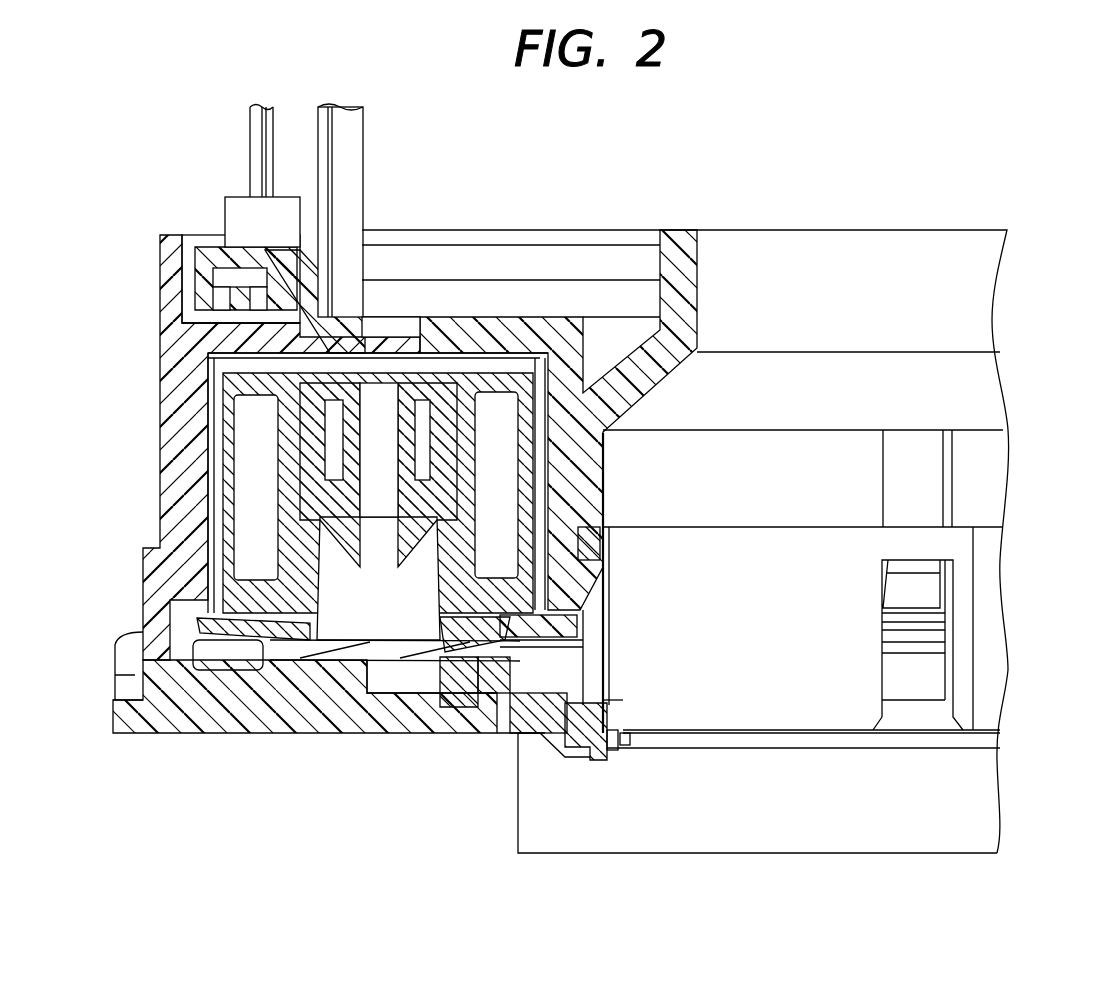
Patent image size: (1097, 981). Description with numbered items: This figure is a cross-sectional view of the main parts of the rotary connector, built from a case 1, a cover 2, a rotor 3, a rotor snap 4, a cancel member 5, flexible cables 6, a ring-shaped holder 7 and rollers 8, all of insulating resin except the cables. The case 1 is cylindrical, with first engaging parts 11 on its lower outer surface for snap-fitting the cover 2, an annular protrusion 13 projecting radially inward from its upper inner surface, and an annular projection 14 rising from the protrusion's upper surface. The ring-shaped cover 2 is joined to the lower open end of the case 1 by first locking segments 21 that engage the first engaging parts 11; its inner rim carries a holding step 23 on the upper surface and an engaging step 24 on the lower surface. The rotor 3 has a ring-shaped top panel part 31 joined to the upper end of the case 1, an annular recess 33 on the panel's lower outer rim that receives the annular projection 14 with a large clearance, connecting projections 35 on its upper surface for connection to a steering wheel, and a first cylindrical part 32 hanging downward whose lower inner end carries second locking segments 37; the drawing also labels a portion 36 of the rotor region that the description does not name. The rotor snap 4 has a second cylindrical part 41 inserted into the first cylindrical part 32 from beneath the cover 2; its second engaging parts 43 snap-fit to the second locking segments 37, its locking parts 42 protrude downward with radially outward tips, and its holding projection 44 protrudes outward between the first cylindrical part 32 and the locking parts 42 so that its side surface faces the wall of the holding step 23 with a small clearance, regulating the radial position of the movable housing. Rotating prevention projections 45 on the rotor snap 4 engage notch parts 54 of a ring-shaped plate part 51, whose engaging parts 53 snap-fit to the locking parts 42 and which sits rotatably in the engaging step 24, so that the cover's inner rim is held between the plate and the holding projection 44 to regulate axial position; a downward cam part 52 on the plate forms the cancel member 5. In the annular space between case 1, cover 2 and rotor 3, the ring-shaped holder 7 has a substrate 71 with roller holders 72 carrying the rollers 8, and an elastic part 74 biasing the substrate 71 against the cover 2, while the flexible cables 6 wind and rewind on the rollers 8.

The case 1 is at (180, 436).
The cover 2 is at (254, 700).
The rotor 3 is at (548, 323).
The rotor snap 4 is at (787, 715).
The cancel member 5 is at (678, 820).
The flexible cables 6 is at (206, 486).
The ring-shaped holder 7 is at (258, 640).
The rollers 8 is at (228, 392).
The first engaging parts 11 is at (128, 716).
The annular protrusion 13 is at (238, 340).
The annular projection 14 is at (210, 300).
The first locking segments 21 is at (128, 688).
The holding step 23 is at (452, 678).
The engaging step 24 is at (483, 655).
The top panel part 31 is at (463, 327).
The first cylindrical part 32 is at (603, 478).
The annular recess 33 is at (222, 258).
The connecting projections 35 is at (248, 146).
The valve housing wall 36 is at (718, 528).
The second locking segments 37 is at (927, 592).
The second cylindrical part 41 is at (808, 545).
The locking parts 42 is at (575, 757).
The second engaging parts 43 is at (893, 562).
The holding projection 44 is at (515, 740).
The rotating prevention projections 45 is at (622, 742).
The ring-shaped plate part 51 is at (513, 695).
The cam part 52 is at (863, 820).
The engaging parts 53 is at (620, 702).
The notch parts 54 is at (592, 750).
The substrate 71 is at (398, 650).
The roller holders 72 is at (327, 627).
The elastic part 74 is at (367, 717).